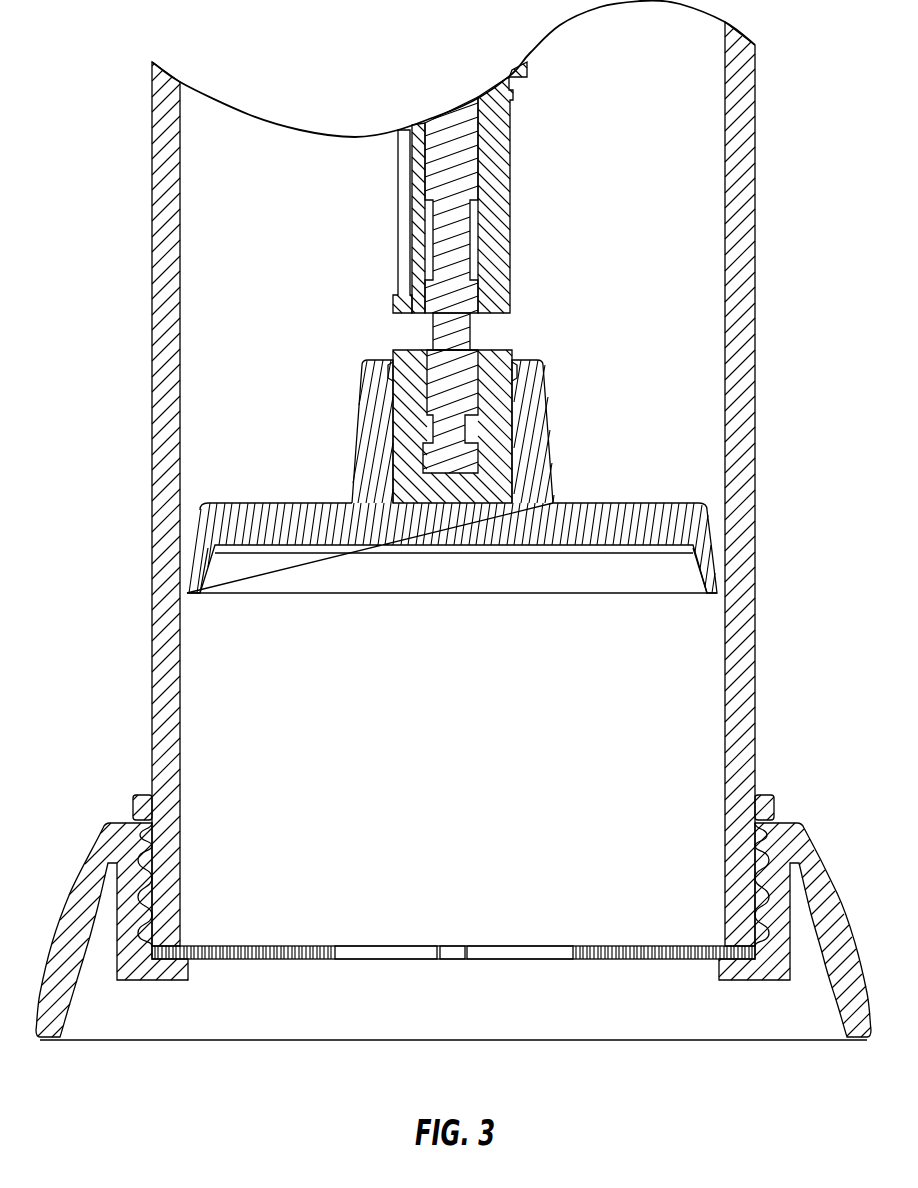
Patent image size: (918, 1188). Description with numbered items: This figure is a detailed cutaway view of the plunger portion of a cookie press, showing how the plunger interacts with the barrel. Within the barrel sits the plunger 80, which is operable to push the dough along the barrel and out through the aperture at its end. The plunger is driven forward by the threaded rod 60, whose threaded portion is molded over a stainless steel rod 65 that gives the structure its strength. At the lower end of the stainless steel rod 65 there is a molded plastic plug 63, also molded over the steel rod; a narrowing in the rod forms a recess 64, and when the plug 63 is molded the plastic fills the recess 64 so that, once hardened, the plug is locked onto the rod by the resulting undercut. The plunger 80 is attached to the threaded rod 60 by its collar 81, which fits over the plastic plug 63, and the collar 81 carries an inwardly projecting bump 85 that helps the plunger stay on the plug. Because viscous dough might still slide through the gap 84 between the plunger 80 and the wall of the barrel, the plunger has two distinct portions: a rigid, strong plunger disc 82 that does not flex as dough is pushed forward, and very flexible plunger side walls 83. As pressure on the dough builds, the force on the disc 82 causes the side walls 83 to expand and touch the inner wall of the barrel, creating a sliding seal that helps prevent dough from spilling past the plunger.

The threaded rod 60 is at (498, 240).
The molded plastic plug 63 is at (493, 455).
The recess 64 is at (458, 427).
The stainless steel rod 65 is at (455, 157).
The plunger 80 is at (368, 517).
The collar 81 is at (370, 437).
The plunger disc 82 is at (620, 530).
The plunger side walls 83 is at (712, 598).
The gap 84 is at (152, 617).
The inwardly projecting bump 85 is at (392, 378).